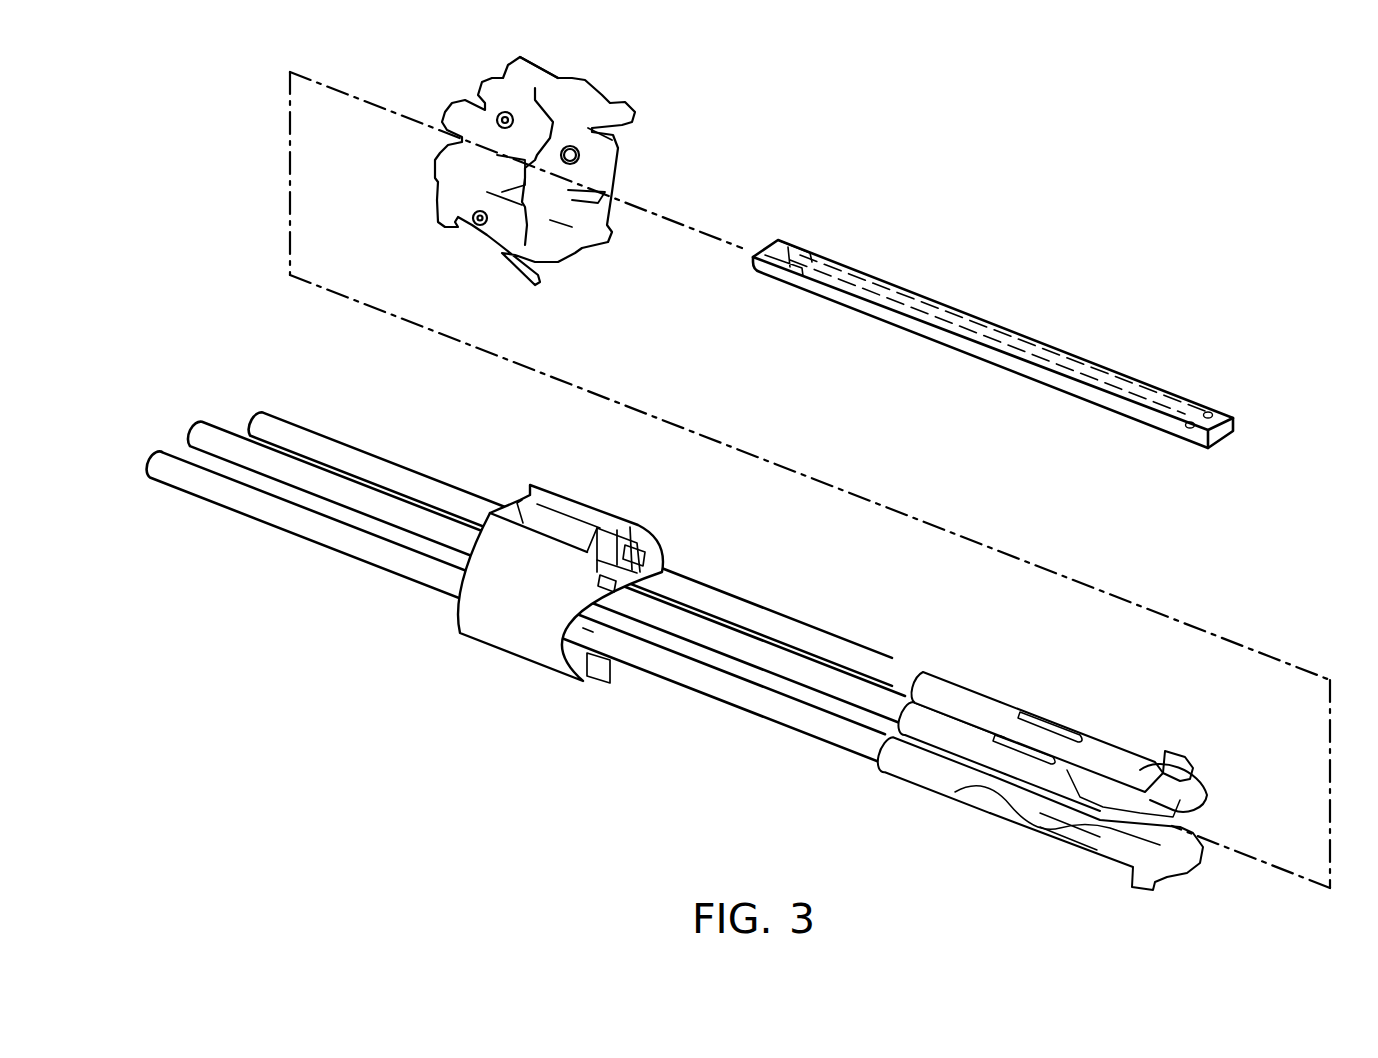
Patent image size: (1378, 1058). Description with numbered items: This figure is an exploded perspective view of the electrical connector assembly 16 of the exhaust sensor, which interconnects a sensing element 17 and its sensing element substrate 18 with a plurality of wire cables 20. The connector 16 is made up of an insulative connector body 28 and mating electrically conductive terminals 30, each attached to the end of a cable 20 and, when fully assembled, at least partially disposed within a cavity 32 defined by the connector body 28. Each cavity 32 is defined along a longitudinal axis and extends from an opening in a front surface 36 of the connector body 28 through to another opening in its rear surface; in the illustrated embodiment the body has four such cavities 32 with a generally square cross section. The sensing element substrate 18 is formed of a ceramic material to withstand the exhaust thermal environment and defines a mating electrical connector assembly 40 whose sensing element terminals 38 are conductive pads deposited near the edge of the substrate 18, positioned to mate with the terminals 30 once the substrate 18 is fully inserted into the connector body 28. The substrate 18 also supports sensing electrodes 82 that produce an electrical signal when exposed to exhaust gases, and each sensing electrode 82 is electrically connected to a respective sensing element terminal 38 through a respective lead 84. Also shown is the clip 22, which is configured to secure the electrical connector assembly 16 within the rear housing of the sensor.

The electrical connector assembly 16 is at (828, 120).
The sensing element 17 is at (1093, 208).
The sensing element substrate 18 is at (1032, 335).
The wire cable 20 is at (748, 722).
The clip 22 is at (540, 80).
The connector body 28 is at (497, 630).
The mating terminal 30 is at (968, 813).
The cavity 32 is at (633, 553).
The front surface 36 is at (588, 506).
The sensing element terminal 38 is at (790, 248).
The mating electrical connector assembly 40 is at (908, 264).
The sensing electrode 82 is at (1212, 414).
The lead 84 is at (988, 300).